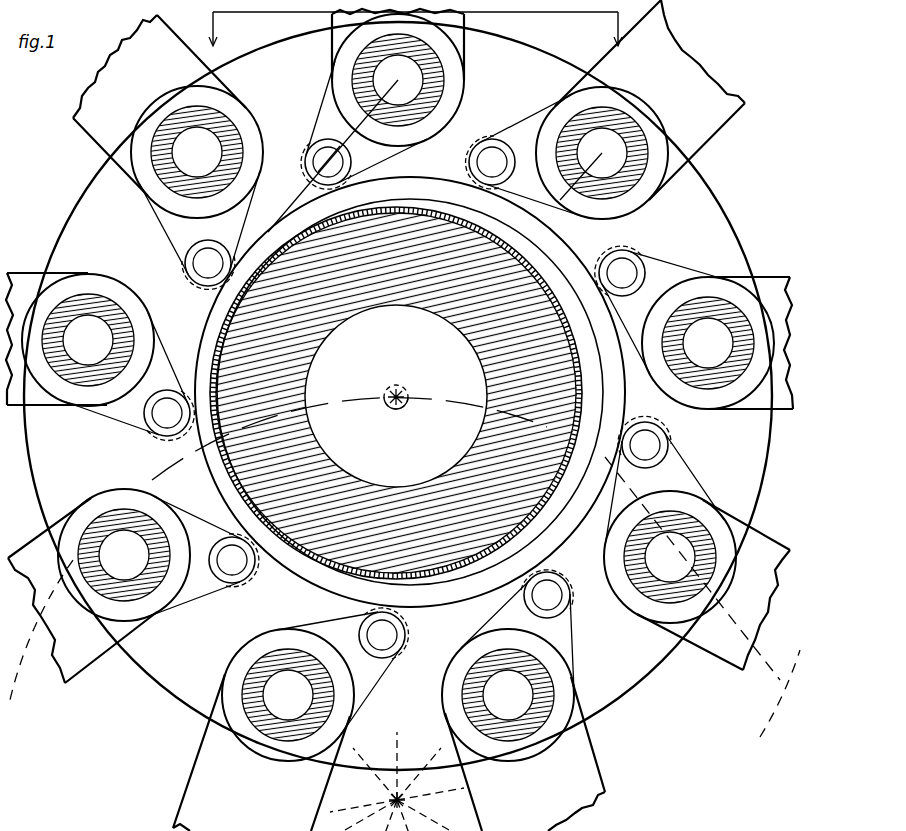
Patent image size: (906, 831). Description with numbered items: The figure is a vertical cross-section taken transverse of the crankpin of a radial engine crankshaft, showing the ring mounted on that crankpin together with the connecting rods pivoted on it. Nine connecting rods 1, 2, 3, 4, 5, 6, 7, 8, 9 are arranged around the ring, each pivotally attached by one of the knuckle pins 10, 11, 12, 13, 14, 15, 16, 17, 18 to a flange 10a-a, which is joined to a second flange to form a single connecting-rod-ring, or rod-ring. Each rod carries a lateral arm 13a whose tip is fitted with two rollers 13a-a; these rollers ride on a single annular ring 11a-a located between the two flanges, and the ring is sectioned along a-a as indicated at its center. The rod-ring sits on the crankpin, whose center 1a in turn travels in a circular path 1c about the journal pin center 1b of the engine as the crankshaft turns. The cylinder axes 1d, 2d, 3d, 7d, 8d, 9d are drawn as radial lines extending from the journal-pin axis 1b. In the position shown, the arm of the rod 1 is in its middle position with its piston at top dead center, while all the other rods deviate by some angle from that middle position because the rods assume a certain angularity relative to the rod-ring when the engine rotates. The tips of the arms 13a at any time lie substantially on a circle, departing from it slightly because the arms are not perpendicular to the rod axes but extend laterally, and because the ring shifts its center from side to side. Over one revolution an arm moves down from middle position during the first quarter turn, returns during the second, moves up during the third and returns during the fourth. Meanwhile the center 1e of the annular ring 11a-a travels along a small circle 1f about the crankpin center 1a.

The connecting rod 1 is at (447, 10).
The crankpin center 1a is at (398, 393).
The journal pin center 1b is at (397, 781).
The circular path 1c is at (26, 696).
The cylinder axis 1d is at (397, 745).
The center of the annular ring 1e is at (408, 405).
The small circle 1f is at (390, 410).
The connecting rod 2 is at (468, 100).
The connecting rod 3 is at (750, 343).
The connecting rod 4 is at (697, 568).
The connecting rod 5 is at (525, 754).
The connecting rod 6 is at (261, 752).
The connecting rod 7 is at (82, 590).
The connecting rod 8 is at (56, 340).
The connecting rod 9 is at (159, 105).
The knuckle pin 10 is at (450, 84).
The knuckle pin 11 is at (620, 188).
The knuckle pin 12 is at (728, 385).
The knuckle pin 13 is at (670, 527).
The arm 13a is at (330, 116).
The rollers 13a-a is at (478, 160).
The flange 10a-a is at (720, 191).
The annular ring 11a-a is at (560, 247).
The knuckle pin 14 is at (470, 688).
The knuckle pin 15 is at (262, 662).
The knuckle pin 16 is at (145, 520).
The knuckle pin 17 is at (105, 305).
The knuckle pin 18 is at (230, 120).
The section line a-a is at (349, 432).
The cylinder axis 2d is at (431, 762).
The cylinder axis 3d is at (446, 795).
The cylinder axis 7d is at (352, 826).
The cylinder axis 8d is at (352, 797).
The cylinder axis 9d is at (368, 764).